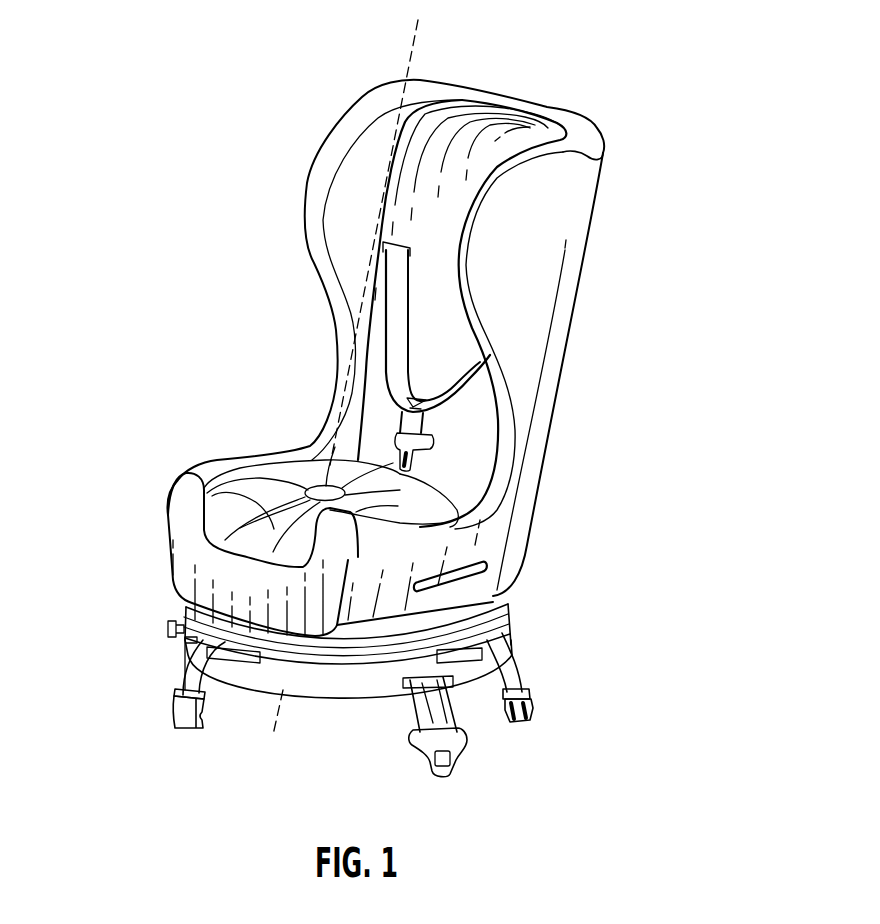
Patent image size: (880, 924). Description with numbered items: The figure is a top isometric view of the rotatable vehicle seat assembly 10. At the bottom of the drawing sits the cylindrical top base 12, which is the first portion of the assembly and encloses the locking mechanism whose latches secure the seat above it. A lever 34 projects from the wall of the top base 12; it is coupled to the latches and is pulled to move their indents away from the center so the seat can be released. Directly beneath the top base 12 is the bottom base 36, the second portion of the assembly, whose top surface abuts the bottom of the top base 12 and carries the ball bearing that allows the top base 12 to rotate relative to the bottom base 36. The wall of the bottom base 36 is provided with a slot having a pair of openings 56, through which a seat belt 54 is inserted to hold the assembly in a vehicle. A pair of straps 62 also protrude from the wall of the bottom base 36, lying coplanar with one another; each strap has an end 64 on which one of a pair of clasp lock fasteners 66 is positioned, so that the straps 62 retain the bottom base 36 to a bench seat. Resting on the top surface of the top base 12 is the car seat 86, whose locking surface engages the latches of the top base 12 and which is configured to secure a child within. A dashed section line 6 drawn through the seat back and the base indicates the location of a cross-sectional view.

The rotatable vehicle seat assembly 10 is at (665, 134).
The top base 12 is at (495, 595).
The lever 34 is at (168, 628).
The bottom base 36 is at (184, 645).
The seat belt 54 is at (437, 712).
The pair of openings 56 is at (452, 688).
The pair of straps 62 is at (180, 668).
The end 64 is at (185, 688).
The pair of clasp lock fasteners 66 is at (180, 718).
The car seat 86 is at (556, 362).
The section line 6 is at (419, 19).